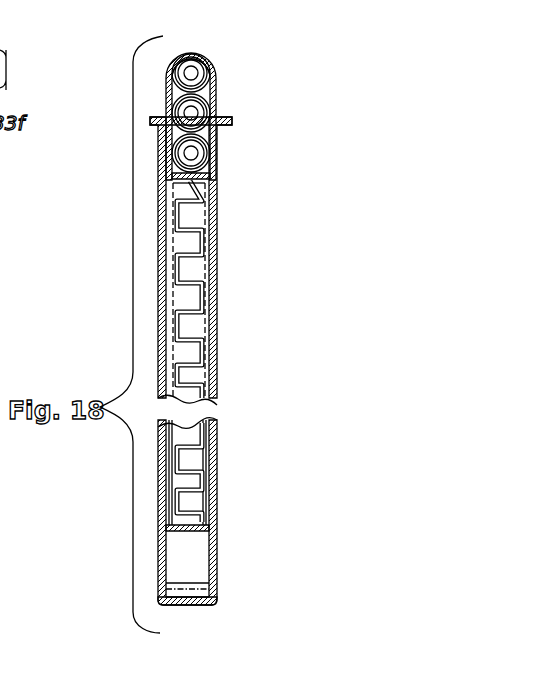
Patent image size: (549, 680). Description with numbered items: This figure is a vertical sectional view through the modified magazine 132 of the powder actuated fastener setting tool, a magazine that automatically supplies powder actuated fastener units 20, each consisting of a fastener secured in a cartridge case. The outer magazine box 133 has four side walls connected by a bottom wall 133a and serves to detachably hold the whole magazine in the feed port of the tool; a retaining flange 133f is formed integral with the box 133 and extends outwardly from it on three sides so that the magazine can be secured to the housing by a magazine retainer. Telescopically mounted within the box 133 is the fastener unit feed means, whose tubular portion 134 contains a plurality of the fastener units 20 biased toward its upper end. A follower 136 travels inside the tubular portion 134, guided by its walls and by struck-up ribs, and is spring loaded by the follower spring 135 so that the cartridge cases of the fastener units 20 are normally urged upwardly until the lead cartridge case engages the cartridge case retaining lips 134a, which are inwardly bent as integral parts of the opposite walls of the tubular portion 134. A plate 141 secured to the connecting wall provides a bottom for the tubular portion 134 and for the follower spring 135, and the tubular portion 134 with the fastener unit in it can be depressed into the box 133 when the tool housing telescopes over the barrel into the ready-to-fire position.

The powder actuated fastener unit 20 is at (199, 112).
The magazine 132 is at (118, 333).
The outer magazine box 133 is at (217, 320).
The bottom wall 133a is at (188, 606).
The retaining flange 133f is at (151, 123).
The tubular portion 134 is at (211, 410).
The cartridge case retaining lip 134a is at (214, 58).
The follower spring 135 is at (186, 258).
The follower 136 is at (205, 184).
The bottom plate 141 is at (187, 531).